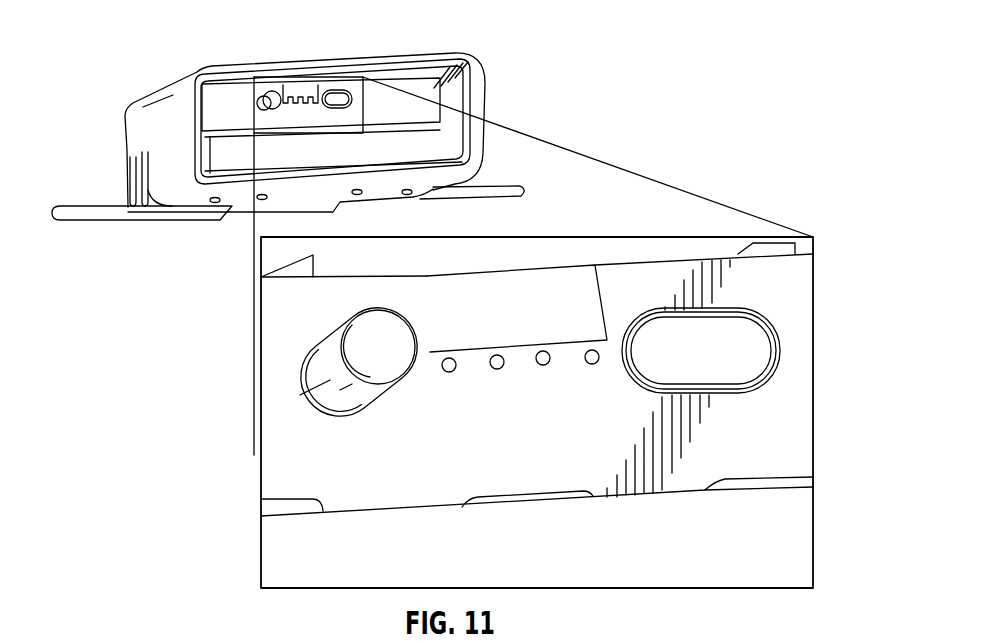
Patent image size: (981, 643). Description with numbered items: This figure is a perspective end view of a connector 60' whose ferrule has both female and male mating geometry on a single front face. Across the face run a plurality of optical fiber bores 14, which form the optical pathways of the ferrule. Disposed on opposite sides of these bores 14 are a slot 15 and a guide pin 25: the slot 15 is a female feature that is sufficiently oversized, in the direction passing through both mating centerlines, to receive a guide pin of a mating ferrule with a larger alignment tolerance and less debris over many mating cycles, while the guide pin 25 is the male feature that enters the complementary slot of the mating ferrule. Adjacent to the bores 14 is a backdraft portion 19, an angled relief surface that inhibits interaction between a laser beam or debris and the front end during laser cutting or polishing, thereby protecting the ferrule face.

The connector 60' is at (288, 118).
The backdraft portion 19 is at (558, 302).
The optical fiber bores 14 is at (589, 363).
The guide pin 25 is at (308, 374).
The slot 15 is at (740, 353).